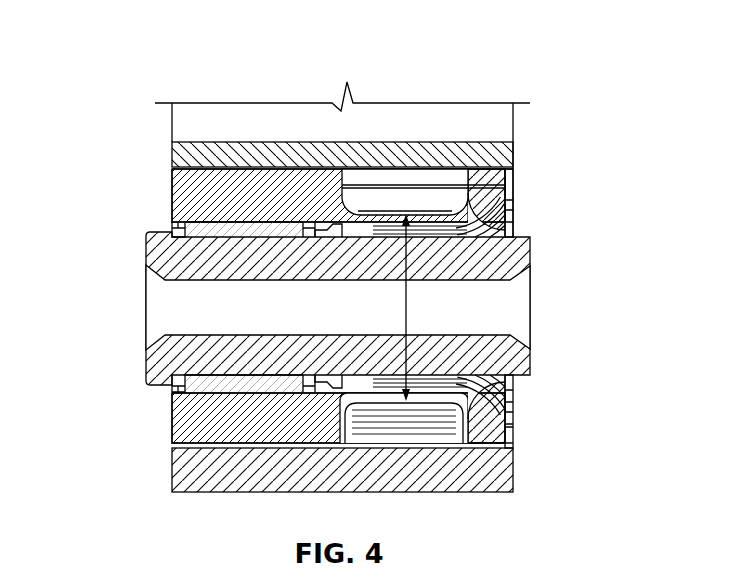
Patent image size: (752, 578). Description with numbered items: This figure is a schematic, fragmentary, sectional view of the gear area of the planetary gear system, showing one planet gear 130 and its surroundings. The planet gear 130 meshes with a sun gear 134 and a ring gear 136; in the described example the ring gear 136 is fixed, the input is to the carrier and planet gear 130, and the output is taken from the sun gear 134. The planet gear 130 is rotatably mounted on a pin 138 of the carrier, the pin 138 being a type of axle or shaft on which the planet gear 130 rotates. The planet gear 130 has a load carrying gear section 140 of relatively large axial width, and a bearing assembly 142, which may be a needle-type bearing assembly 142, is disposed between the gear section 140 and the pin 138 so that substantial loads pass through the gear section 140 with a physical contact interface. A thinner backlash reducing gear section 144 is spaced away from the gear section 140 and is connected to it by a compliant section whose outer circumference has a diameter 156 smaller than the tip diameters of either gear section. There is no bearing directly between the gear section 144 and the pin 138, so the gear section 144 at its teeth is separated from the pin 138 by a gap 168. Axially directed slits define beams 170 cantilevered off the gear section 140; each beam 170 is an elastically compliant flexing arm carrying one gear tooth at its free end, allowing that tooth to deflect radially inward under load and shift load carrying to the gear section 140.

The planet gear 130 is at (289, 185).
The sun gear 134 is at (508, 472).
The ring gear 136 is at (510, 157).
The pin 138 is at (500, 262).
The gear section 140 is at (218, 183).
The bearing assembly 142 is at (208, 232).
The gear section 144 is at (486, 182).
The diameter 156 is at (406, 308).
The gap 168 is at (492, 222).
The beam 170 is at (374, 208).